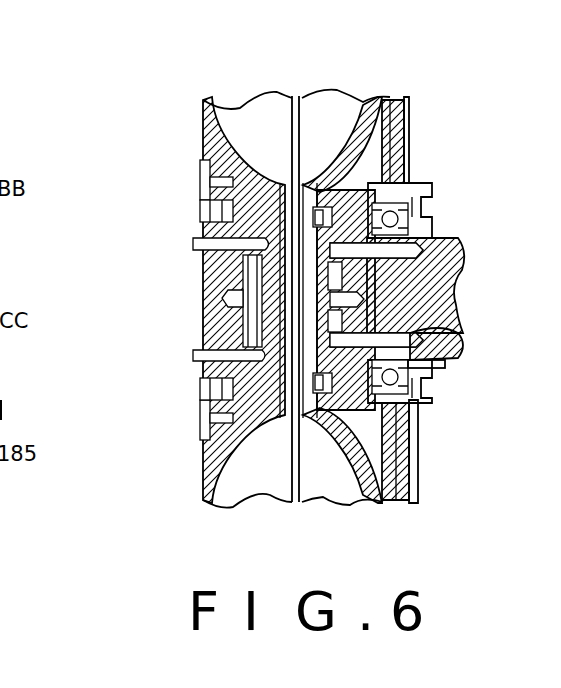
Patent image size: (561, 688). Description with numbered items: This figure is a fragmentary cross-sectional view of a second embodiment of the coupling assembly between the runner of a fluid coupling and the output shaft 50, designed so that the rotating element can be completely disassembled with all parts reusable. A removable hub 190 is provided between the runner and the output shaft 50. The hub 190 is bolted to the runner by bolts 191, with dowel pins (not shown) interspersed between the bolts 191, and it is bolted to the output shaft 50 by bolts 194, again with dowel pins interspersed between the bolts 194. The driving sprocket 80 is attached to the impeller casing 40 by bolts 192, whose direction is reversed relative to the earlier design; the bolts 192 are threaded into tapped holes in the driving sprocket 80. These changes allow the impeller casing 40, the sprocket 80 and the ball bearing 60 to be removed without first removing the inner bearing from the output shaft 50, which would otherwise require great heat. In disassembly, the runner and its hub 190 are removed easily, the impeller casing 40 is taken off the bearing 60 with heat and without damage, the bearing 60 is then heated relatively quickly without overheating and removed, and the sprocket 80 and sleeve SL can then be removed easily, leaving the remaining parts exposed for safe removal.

The removable hub 190 is at (318, 265).
The bolts 191 is at (335, 177).
The impeller casing 40 is at (405, 97).
The bolts 192 is at (408, 155).
The driving sprocket 80 is at (430, 197).
The bolts 194 is at (428, 225).
The output shaft 50 is at (456, 300).
The ball bearing 60 is at (437, 336).
The sleeve SL is at (441, 366).